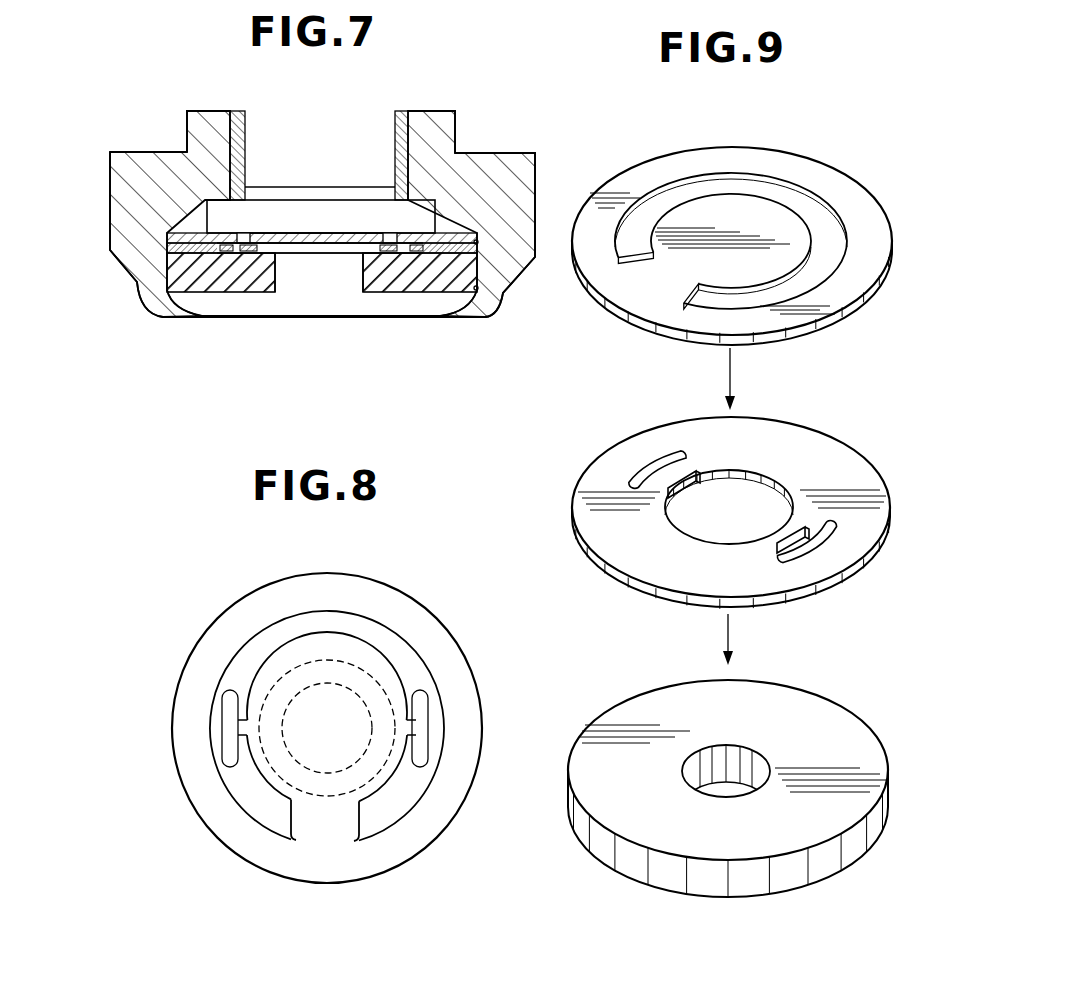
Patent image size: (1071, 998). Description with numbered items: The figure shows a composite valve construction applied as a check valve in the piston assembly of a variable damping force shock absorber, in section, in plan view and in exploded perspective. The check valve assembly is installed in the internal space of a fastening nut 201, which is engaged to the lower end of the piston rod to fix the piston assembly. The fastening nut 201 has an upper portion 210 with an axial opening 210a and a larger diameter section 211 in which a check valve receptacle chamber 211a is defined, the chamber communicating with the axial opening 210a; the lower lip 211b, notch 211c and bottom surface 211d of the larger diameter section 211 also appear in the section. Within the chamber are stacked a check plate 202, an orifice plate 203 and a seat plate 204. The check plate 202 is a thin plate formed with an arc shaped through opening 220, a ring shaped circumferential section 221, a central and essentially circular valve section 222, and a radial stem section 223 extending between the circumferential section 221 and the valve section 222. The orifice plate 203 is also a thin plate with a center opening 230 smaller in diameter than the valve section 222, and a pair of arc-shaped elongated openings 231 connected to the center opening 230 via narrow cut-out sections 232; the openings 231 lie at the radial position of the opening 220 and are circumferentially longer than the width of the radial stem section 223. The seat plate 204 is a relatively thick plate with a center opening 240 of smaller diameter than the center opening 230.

In FIG. 7, the fastening nut 201 is at (332, 215).
In FIG. 7, the cylindrical portion of housing 210 is at (295, 135).
In FIG. 7, the axial opening 210a is at (240, 142).
In FIG. 7, the larger diameter section 211 is at (332, 239).
In FIG. 7, the check valve receptacle chamber 211a is at (170, 172).
In FIG. 7, the crimped lip of flange portion 211b is at (473, 300).
In FIG. 7, the notch of flange portion 211c is at (479, 285).
In FIG. 7, the bottom surface of flange portion 211d is at (462, 318).
In FIG. 7, the check plate 202 is at (268, 189).
In FIG. 8, the check plate 202 is at (321, 739).
In FIG. 9, the check plate 202 is at (732, 225).
In FIG. 7, the orifice plate 203 is at (268, 306).
In FIG. 9, the orifice plate 203 is at (704, 510).
In FIG. 7, the seat plate 204 is at (278, 317).
In FIG. 9, the seat plate 204 is at (726, 775).
In FIG. 7, the arc shaped through opening 220 is at (233, 233).
In FIG. 8, the arc shaped through opening 220 is at (263, 642).
In FIG. 9, the arc shaped through opening 220 is at (658, 203).
In FIG. 7, the ring shaped circumferential section 221 is at (170, 233).
In FIG. 8, the ring shaped circumferential section 221 is at (218, 627).
In FIG. 9, the ring shaped circumferential section 221 is at (837, 185).
In FIG. 7, the valve section 222 is at (323, 232).
In FIG. 8, the valve section 222 is at (367, 662).
In FIG. 9, the valve section 222 is at (738, 210).
In FIG. 8, the radial stem section 223 is at (312, 848).
In FIG. 9, the radial stem section 223 is at (660, 273).
In FIG. 7, the center opening 230 is at (287, 250).
In FIG. 8, the center opening 230 is at (316, 664).
In FIG. 9, the center opening 230 is at (743, 490).
In FIG. 7, the arc-shaped elongated openings 231 is at (200, 250).
In FIG. 8, the arc-shaped elongated openings 231 is at (226, 695).
In FIG. 9, the arc-shaped elongated openings 231 is at (647, 465).
In FIG. 7, the narrow cut-out sections 232 is at (243, 247).
In FIG. 8, the narrow cut-out sections 232 is at (411, 730).
In FIG. 9, the narrow cut-out sections 232 is at (663, 468).
In FIG. 7, the center opening 240 is at (348, 290).
In FIG. 8, the center opening 240 is at (332, 690).
In FIG. 9, the center opening 240 is at (712, 755).